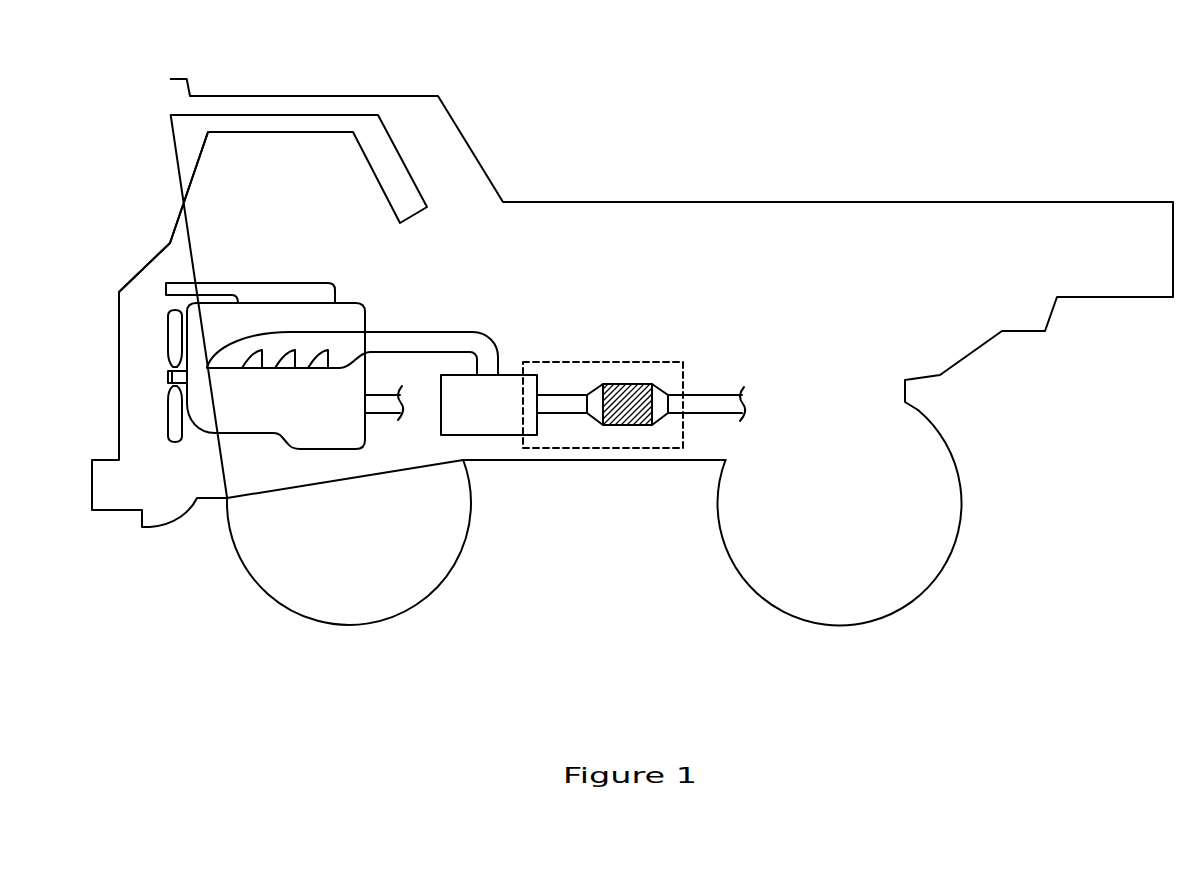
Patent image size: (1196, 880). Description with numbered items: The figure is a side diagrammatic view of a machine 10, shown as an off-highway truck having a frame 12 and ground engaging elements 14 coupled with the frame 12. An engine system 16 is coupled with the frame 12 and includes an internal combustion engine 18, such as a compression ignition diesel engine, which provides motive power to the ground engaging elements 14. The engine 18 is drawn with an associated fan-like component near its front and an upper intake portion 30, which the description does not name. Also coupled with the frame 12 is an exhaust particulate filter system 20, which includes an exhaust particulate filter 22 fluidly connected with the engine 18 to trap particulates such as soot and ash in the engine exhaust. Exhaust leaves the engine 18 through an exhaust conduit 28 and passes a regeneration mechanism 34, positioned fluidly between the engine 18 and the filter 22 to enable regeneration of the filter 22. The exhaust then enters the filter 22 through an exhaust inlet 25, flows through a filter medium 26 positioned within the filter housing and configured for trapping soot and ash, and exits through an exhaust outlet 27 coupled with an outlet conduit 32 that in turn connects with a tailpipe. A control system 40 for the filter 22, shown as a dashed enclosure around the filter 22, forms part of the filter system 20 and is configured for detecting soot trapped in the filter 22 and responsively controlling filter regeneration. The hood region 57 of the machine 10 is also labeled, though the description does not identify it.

The machine 10 is at (819, 166).
The frame 12 is at (515, 462).
The ground engaging elements 14 is at (468, 537).
The engine system 16 is at (304, 453).
The internal combustion engine 18 is at (238, 437).
The exhaust particulate filter system 20 is at (637, 395).
The exhaust particulate filter 22 is at (629, 409).
The exhaust inlet 25 is at (586, 393).
The filter medium 26 is at (628, 390).
The exhaust outlet 27 is at (669, 393).
The exhaust conduit 28 is at (396, 331).
The intake 30 is at (224, 282).
The outlet conduit 32 is at (738, 393).
The regeneration mechanism 34 is at (452, 437).
The control system 40 is at (603, 362).
The hood 57 is at (185, 193).